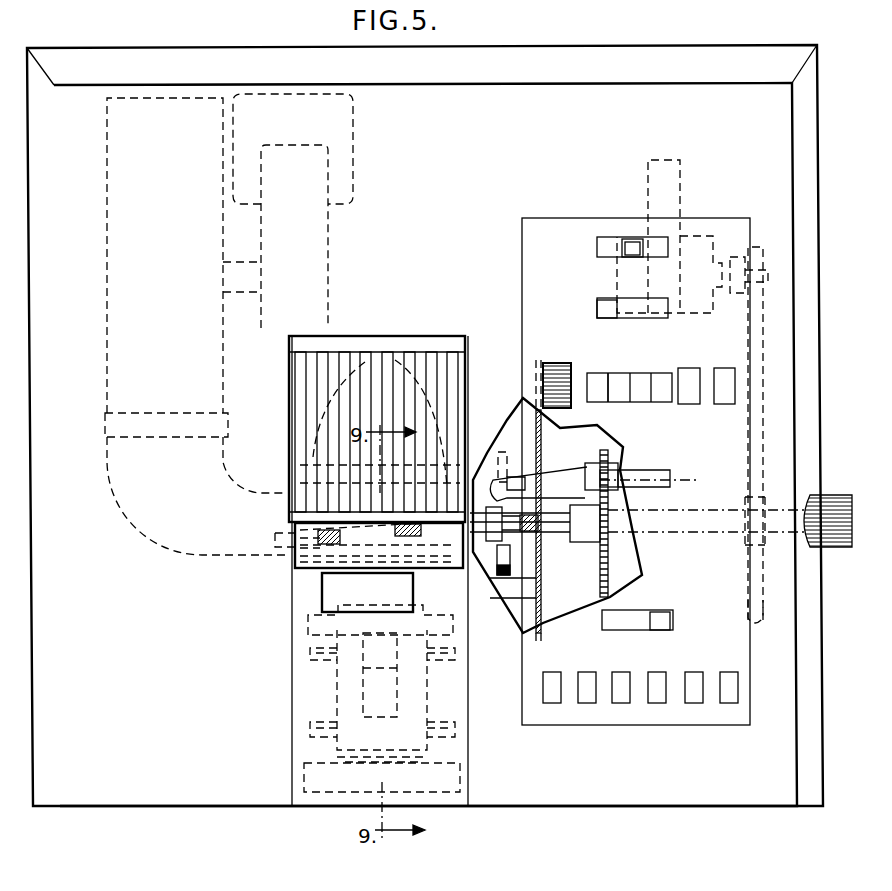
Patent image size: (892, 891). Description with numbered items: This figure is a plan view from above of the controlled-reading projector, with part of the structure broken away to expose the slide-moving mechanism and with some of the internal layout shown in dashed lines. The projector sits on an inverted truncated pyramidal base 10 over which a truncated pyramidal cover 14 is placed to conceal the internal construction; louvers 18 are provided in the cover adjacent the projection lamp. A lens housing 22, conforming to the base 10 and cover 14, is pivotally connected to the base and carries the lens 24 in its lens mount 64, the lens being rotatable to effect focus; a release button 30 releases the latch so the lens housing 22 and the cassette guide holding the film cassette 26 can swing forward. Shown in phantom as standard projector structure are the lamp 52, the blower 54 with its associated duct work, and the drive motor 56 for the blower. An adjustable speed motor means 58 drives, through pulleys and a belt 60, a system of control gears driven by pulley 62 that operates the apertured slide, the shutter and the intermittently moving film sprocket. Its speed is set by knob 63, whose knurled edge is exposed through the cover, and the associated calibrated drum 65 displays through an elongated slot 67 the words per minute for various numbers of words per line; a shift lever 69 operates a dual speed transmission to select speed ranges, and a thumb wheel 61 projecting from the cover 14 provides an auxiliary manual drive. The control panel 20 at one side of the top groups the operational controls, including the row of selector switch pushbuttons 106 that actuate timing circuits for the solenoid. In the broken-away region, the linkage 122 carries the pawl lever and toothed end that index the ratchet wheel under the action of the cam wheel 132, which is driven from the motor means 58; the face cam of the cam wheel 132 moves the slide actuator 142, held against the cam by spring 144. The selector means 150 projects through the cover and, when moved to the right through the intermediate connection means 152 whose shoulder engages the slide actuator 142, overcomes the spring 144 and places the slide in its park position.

The base 10 is at (108, 806).
The cover 14 is at (742, 98).
The louvers 18 is at (443, 383).
The control panel 20 is at (722, 452).
The lens housing 22 is at (433, 800).
The lens 24 is at (462, 772).
The film cassette 26 is at (400, 600).
The release button 30 is at (296, 560).
The lamp 52 is at (318, 393).
The blower 54 is at (106, 237).
The drive motor 56 is at (330, 246).
The adjustable speed motor means 58 is at (695, 232).
The belt 60 is at (762, 350).
The thumb wheel 61 is at (836, 500).
The pulley 62 is at (762, 622).
The knob 63 is at (571, 372).
The lens mount 64 is at (330, 690).
The calibrated drum 65 is at (640, 380).
The elongated slot 67 is at (617, 398).
The shift lever 69 is at (597, 310).
The selector switch pushbuttons 106 is at (640, 700).
The linkage 122 is at (527, 426).
The cam wheel 132 is at (515, 575).
The slide actuator 142 is at (520, 541).
The spring 144 is at (296, 530).
The selector means 150 is at (615, 473).
The intermediate connection means 152 is at (556, 478).